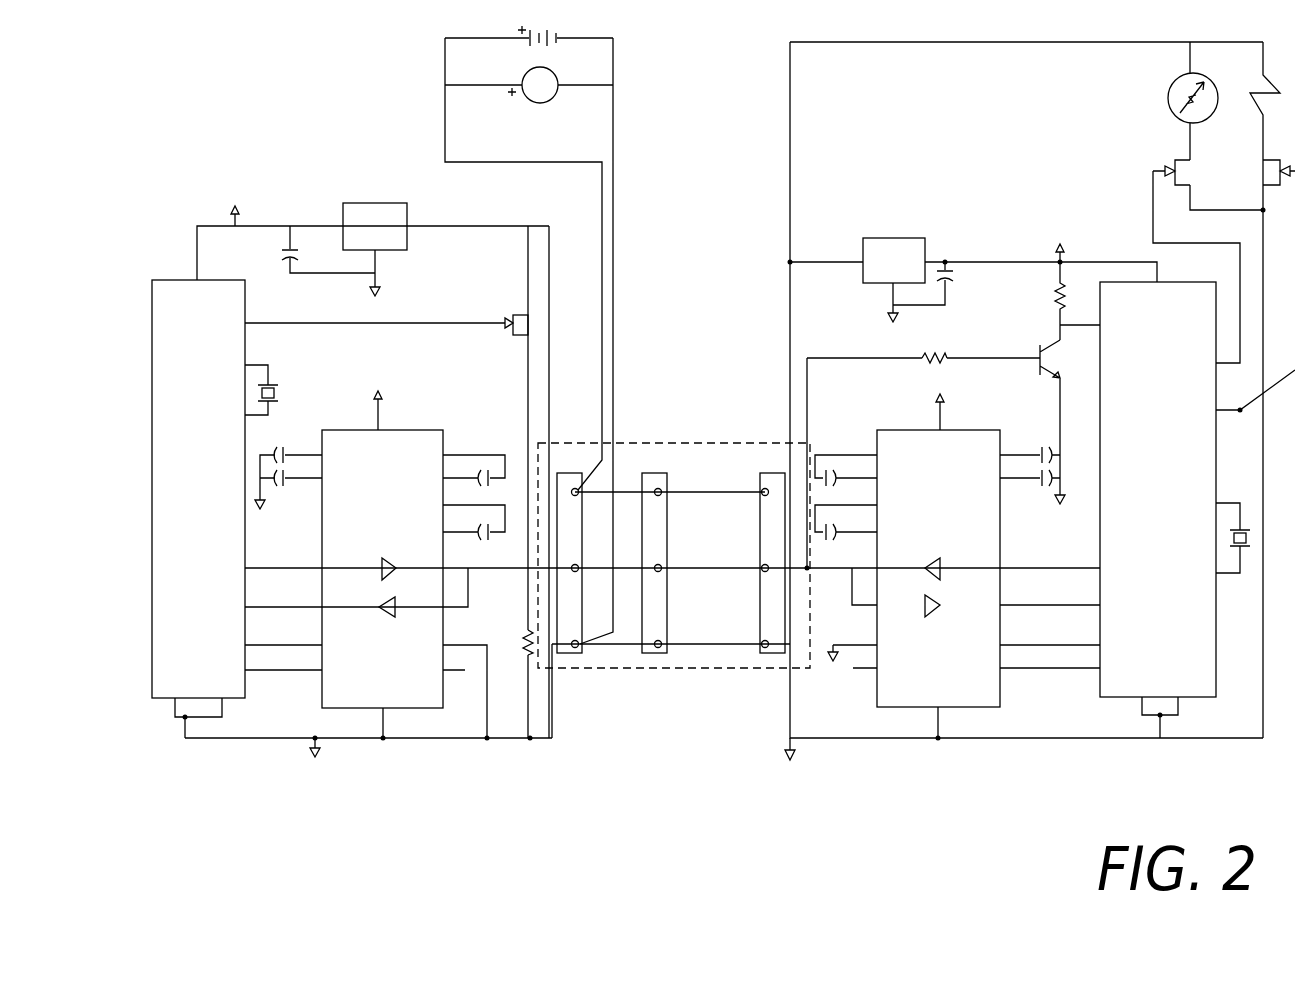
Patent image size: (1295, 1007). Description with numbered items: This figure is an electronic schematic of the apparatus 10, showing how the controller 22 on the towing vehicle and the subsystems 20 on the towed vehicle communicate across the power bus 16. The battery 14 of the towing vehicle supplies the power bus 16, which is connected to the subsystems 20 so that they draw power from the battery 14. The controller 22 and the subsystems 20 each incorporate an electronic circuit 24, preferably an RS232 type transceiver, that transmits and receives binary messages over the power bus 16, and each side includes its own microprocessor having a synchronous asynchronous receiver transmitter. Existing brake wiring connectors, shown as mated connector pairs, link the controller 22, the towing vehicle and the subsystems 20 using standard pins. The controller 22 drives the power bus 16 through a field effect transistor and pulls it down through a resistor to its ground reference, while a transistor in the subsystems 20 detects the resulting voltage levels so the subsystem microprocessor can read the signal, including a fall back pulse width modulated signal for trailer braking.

The apparatus 10 is at (762, 838).
The battery 14 is at (528, 40).
The power bus 16 is at (702, 670).
The subsystems 20 is at (1078, 738).
The controller 22 is at (405, 740).
The electronic circuit 24 is at (908, 432).